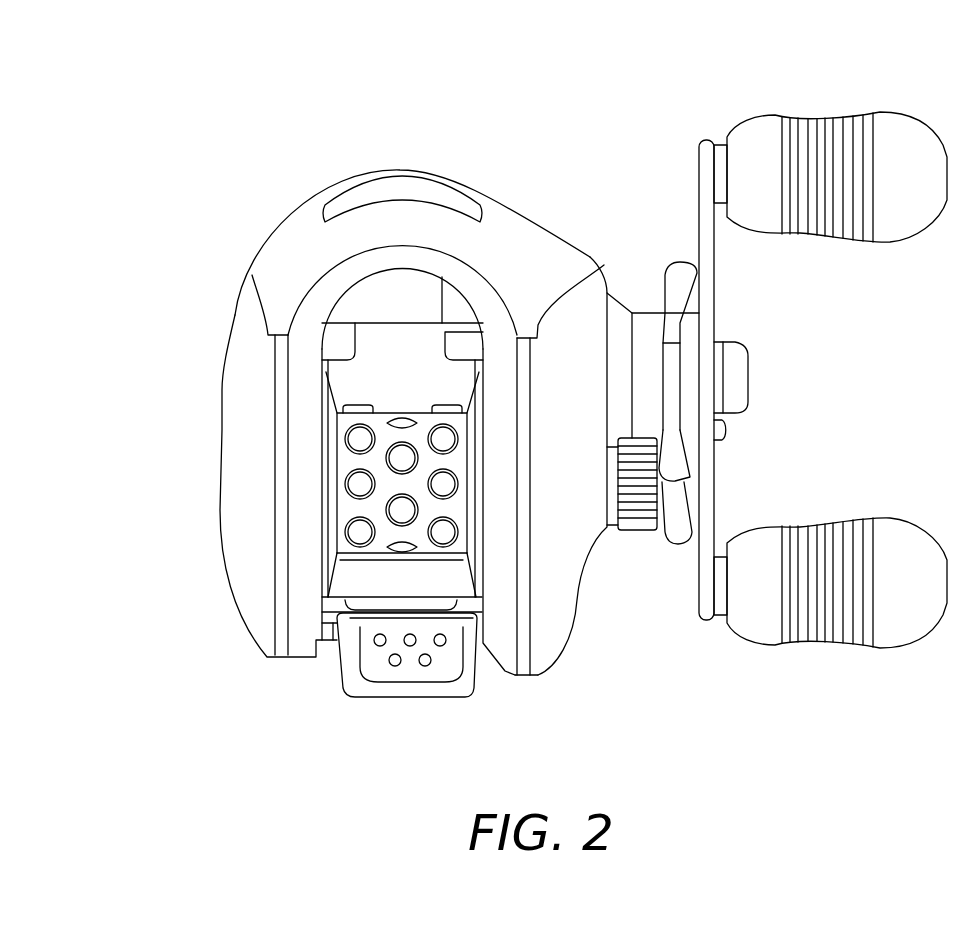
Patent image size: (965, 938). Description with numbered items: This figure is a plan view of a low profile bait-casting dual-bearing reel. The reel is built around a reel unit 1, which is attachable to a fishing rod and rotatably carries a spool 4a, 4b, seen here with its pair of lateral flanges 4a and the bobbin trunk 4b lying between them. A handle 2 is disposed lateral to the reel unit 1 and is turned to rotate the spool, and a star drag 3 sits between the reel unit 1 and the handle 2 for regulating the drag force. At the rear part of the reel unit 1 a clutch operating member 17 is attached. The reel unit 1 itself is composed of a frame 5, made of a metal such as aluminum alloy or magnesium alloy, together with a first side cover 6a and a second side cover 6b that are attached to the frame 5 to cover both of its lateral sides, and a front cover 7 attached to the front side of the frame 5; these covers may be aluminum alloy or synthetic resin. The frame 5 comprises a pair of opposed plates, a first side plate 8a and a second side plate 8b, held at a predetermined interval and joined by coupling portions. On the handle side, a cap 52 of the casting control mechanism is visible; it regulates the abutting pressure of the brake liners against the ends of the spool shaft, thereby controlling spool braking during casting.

The reel unit 1 is at (507, 160).
The handle 2 is at (709, 140).
The star drag 3 is at (677, 260).
The flanges 4a is at (468, 487).
The bobbin trunk 4b is at (378, 424).
The frame 5 is at (492, 286).
The first side cover 6a is at (231, 391).
The second side cover 6b is at (604, 265).
The front cover 7 is at (297, 233).
The first side plate 8a is at (283, 397).
The second side plate 8b is at (522, 562).
The clutch operating member 17 is at (473, 670).
The cap 52 is at (634, 530).